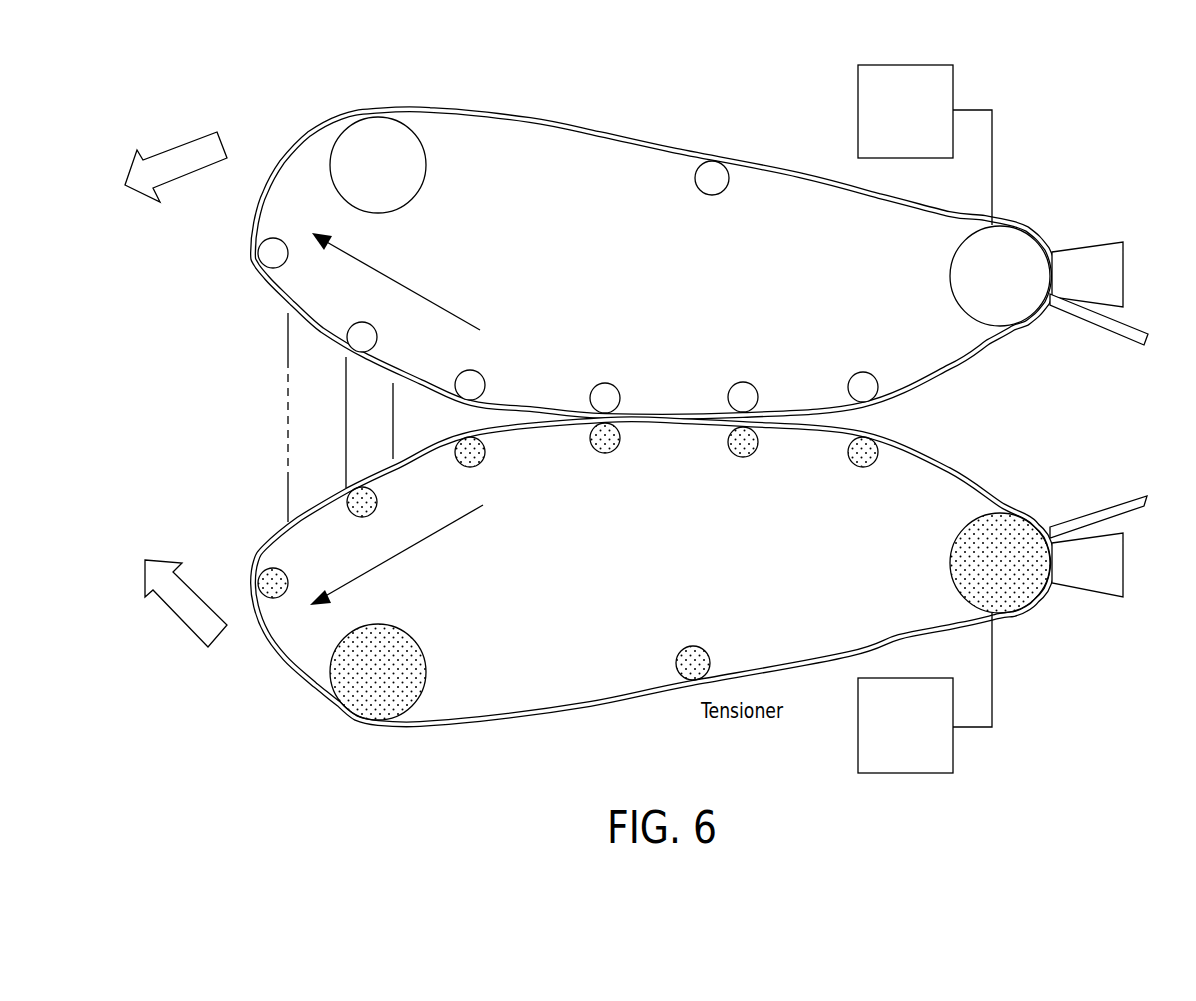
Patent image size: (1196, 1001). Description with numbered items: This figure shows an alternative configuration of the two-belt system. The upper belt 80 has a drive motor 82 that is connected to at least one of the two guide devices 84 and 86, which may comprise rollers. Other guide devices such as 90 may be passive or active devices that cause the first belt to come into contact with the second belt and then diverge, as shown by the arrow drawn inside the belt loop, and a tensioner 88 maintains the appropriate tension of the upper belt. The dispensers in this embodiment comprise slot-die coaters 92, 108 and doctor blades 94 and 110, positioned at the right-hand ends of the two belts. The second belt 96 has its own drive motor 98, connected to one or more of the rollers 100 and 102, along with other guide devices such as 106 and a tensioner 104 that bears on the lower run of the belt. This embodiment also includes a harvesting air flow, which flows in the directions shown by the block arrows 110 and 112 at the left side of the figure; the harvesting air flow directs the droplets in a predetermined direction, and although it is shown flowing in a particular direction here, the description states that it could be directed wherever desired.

The upper belt 80 is at (578, 120).
The drive motor 82 is at (953, 84).
The guide device 84 is at (426, 161).
The guide device 86 is at (949, 274).
The tensioner 88 is at (694, 178).
The guide device 90 is at (740, 382).
The slot-die coater 92 is at (1123, 250).
The doctor blade 94 is at (1147, 343).
The second belt 96 is at (970, 467).
The drive motor 98 is at (953, 749).
The roller 100 is at (949, 562).
The roller 102 is at (426, 672).
The tensioner 104 is at (694, 644).
The guide device 106 is at (620, 441).
The slot-die coater 108 is at (1124, 572).
The doctor blade 110 is at (1147, 497).
The harvesting air flow arrow 112 is at (185, 623).